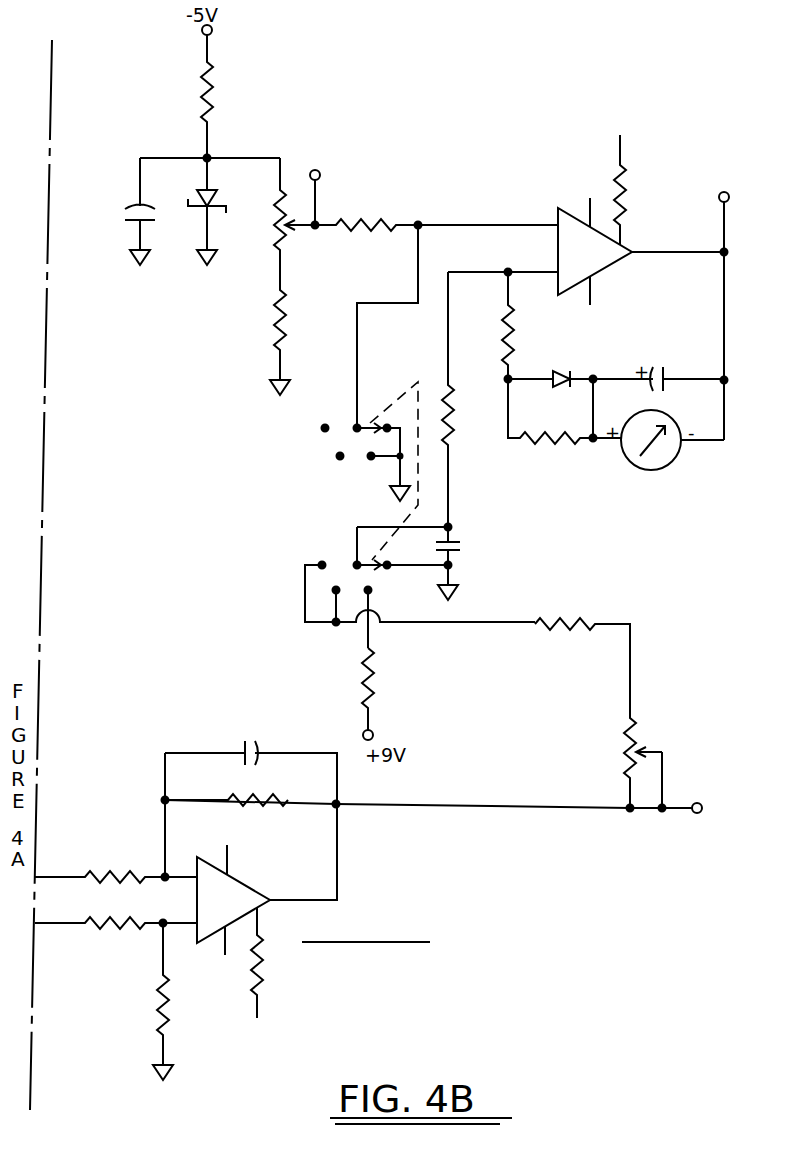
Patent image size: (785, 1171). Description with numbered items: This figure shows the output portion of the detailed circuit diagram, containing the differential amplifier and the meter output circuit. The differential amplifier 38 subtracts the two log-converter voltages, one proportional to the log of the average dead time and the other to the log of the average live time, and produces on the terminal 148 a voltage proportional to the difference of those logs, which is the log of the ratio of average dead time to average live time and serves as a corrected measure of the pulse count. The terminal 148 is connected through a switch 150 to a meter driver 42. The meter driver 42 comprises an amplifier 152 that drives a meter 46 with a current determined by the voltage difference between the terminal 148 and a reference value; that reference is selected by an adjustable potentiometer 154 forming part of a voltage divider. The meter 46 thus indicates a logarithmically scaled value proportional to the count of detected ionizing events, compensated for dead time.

The potentiometer 154 is at (272, 242).
The amplifier 152 is at (560, 196).
The meter driver 42 is at (616, 275).
The meter 46 is at (628, 458).
The switch 150 is at (350, 562).
The terminal 148 is at (434, 808).
The differential amplifier 38 is at (284, 870).